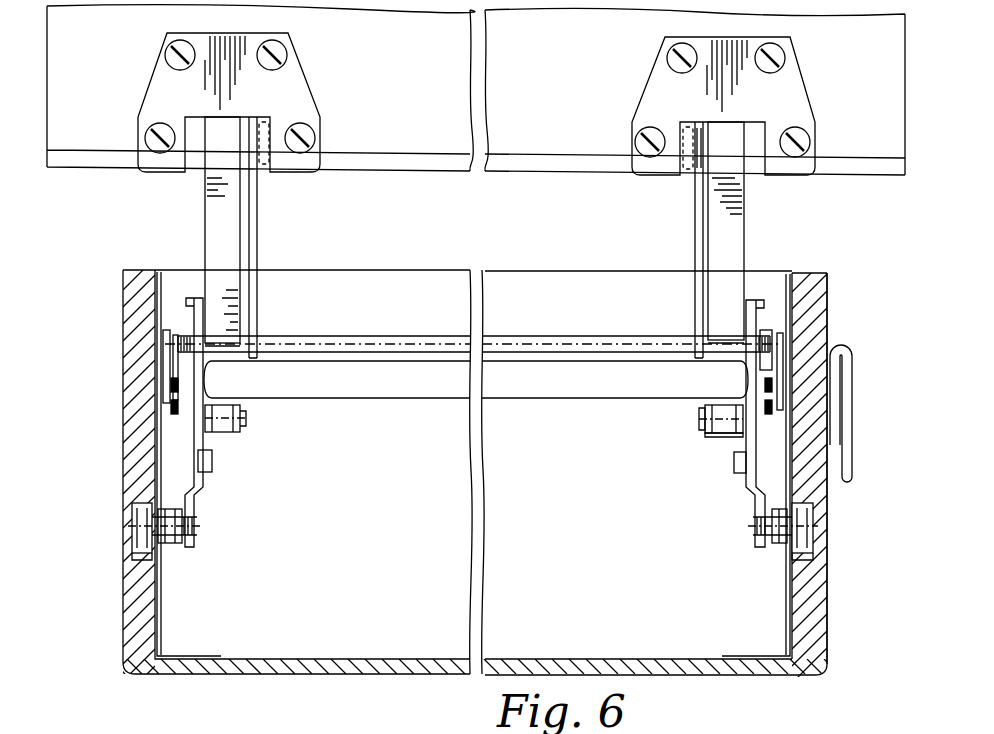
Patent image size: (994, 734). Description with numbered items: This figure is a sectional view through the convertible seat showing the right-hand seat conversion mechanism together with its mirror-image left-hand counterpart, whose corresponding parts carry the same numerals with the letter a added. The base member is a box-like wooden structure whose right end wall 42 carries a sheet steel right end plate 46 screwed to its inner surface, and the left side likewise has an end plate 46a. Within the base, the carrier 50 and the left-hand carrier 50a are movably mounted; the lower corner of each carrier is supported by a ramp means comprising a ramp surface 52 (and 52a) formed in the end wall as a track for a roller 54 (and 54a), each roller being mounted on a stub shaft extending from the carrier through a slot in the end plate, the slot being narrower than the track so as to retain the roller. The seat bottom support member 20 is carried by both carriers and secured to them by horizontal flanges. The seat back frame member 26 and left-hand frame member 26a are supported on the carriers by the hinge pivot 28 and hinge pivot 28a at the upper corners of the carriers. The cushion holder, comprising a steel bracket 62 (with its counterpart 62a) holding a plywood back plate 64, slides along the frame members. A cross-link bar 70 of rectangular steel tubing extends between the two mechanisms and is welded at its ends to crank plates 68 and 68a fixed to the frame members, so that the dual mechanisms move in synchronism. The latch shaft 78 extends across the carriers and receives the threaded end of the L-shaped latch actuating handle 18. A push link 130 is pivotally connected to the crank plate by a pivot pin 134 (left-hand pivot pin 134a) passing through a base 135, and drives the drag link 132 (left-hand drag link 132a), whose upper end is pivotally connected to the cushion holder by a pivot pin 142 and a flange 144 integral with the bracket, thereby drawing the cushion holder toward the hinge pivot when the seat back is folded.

The latch actuating handle 18 is at (848, 400).
The seat bottom support member 20 is at (501, 459).
The frame member 26 is at (735, 225).
The frame member 26a is at (225, 212).
The hinge pivot 28 is at (752, 305).
The hinge pivot 28a is at (197, 300).
The right end wall 42 is at (815, 300).
The right end plate 46 is at (786, 600).
The end plate 46a is at (162, 592).
The carrier 50 is at (752, 500).
The carrier 50a is at (200, 483).
The ramp surface 52 is at (797, 558).
The ramp surface 52a is at (140, 548).
The roller 54 is at (805, 520).
The roller 54a is at (140, 520).
The steel bracket 62 is at (655, 178).
The steel bracket 62a is at (297, 176).
The back plate 64 is at (870, 140).
The crank plate 68 is at (738, 460).
The crank plate 68a is at (212, 447).
The cross-link bar 70 is at (565, 400).
The latch shaft 78 is at (400, 340).
The push link 130 is at (706, 406).
The drag link 132 is at (697, 234).
The drag link 132a is at (262, 232).
The pivot pin 134 is at (705, 420).
The pivot pin 134a is at (246, 420).
The base 135 is at (738, 435).
The pivot pin 142 is at (704, 140).
The flange 144 is at (688, 125).